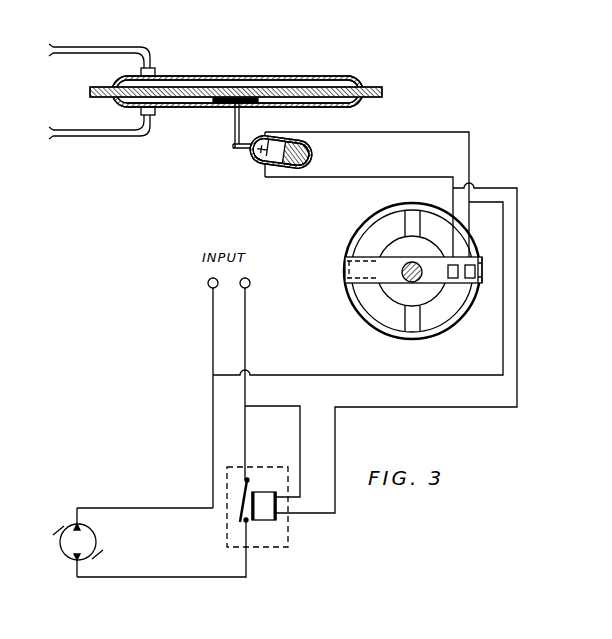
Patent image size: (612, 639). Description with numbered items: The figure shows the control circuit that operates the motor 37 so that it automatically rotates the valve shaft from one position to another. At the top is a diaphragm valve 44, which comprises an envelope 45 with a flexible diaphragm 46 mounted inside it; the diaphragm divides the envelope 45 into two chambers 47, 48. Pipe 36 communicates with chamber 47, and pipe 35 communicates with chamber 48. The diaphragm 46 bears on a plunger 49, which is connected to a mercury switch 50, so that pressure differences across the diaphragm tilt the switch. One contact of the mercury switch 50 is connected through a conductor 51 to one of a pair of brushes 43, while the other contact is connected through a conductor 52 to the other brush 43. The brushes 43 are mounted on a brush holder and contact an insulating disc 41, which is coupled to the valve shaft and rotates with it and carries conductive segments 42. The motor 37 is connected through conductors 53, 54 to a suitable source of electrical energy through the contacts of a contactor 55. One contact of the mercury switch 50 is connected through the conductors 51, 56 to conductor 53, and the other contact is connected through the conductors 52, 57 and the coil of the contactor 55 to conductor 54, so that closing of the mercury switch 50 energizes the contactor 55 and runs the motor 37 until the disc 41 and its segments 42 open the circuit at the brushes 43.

The pipe 35 is at (96, 137).
The pipe 36 is at (96, 47).
The motor 37 is at (98, 537).
The insulating disc 41 is at (413, 318).
The conductive segments 42 is at (388, 226).
The brushes 43 is at (455, 282).
The diaphragm valve 44 is at (256, 77).
The envelope 45 is at (305, 77).
The flexible diaphragm 46 is at (186, 88).
The chamber 47 is at (362, 82).
The chamber 48 is at (330, 100).
The plunger 49 is at (223, 103).
The mercury switch 50 is at (250, 160).
The conductor 51 is at (433, 133).
The conductor 52 is at (373, 177).
The conductor 53 is at (163, 507).
The conductor 54 is at (210, 578).
The contactor 55 is at (276, 550).
The conductor 56 is at (298, 375).
The conductor 57 is at (383, 408).